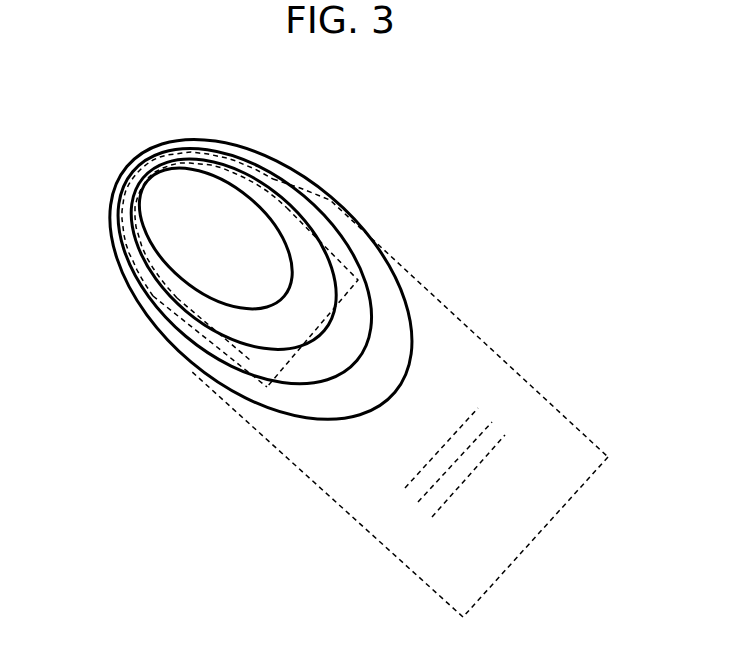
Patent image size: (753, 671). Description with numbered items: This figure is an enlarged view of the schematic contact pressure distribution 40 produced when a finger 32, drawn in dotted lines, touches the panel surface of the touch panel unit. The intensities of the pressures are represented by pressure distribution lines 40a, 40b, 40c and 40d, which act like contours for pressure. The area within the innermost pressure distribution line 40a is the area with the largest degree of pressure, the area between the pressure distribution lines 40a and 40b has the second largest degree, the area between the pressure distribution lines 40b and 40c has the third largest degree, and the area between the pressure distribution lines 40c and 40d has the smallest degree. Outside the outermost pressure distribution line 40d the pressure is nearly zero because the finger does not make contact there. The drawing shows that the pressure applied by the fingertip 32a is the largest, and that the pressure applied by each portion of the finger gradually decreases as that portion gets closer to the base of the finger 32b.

The finger 32 is at (540, 533).
The fingertip 32a is at (152, 124).
The base of the finger 32b is at (641, 466).
The pressure distribution 40 is at (314, 302).
The pressure distribution line 40a is at (240, 308).
The pressure distribution line 40b is at (263, 348).
The pressure distribution line 40c is at (359, 358).
The pressure distribution line 40d is at (392, 395).